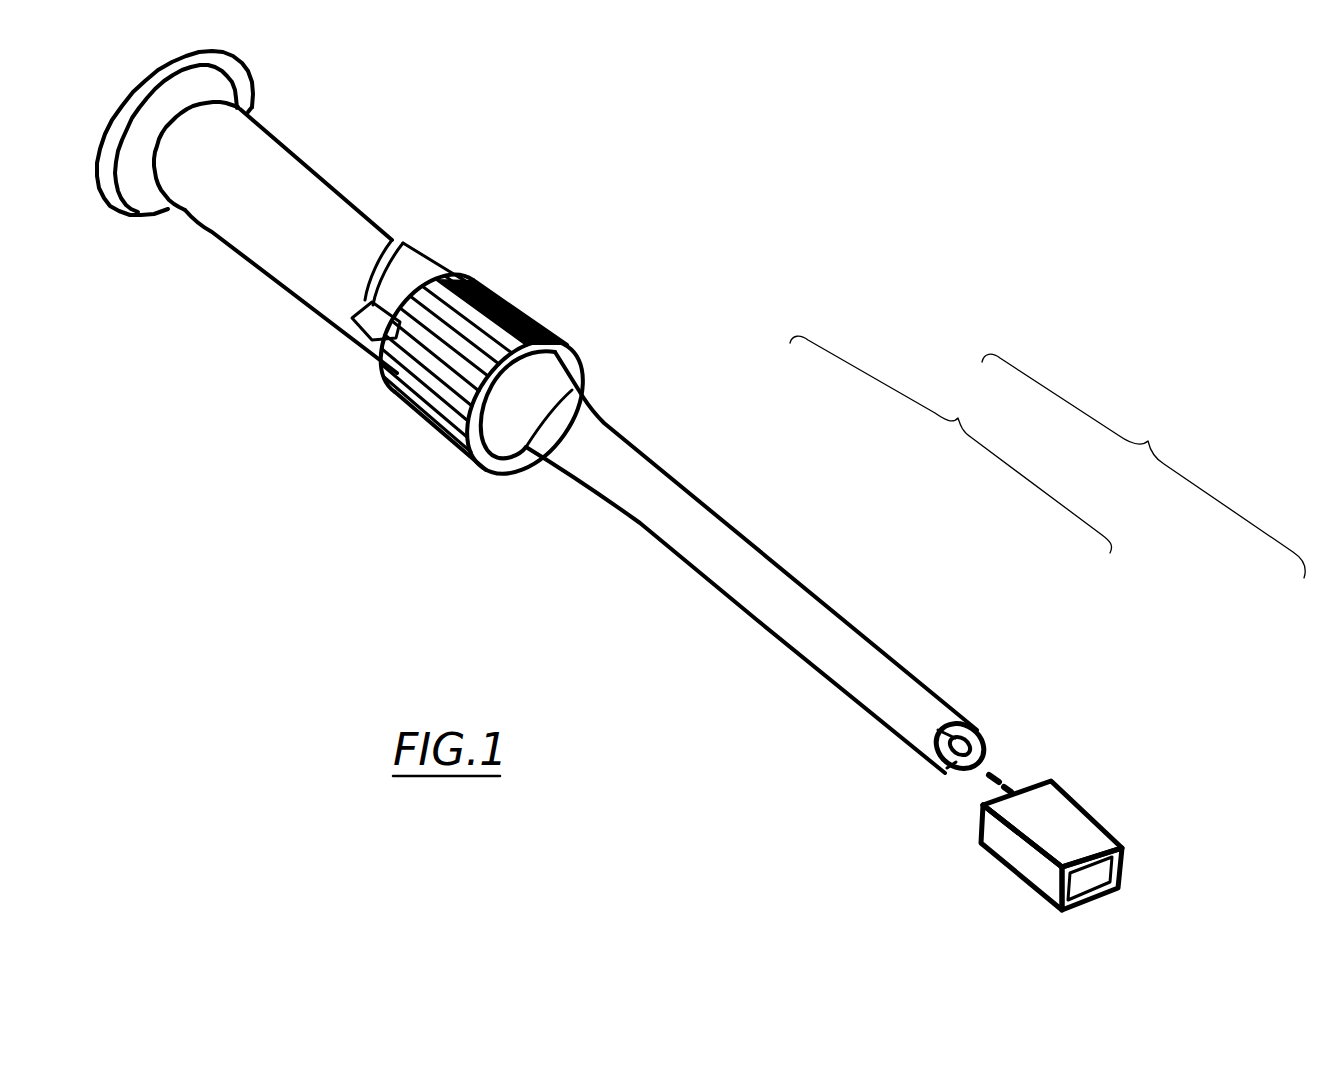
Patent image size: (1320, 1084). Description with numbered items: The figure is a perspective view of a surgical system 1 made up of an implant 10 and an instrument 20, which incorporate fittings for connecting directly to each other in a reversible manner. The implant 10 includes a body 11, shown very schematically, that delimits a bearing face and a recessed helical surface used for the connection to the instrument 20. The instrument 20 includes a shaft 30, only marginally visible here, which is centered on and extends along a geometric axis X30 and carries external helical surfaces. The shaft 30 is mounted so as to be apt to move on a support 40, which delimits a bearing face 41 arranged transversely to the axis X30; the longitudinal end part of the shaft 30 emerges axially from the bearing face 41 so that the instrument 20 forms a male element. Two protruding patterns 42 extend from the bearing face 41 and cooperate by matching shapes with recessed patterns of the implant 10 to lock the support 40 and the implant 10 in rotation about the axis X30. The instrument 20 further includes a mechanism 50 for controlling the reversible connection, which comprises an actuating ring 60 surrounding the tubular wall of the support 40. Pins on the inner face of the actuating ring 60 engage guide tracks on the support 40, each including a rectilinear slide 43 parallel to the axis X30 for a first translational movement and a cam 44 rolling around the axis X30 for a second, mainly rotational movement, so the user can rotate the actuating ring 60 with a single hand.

The surgical system 1 is at (1143, 466).
The implant 10 is at (1118, 802).
The body 11 is at (1023, 857).
The instrument 20 is at (951, 444).
The shaft 30 is at (972, 722).
The geometric axis X30 is at (1005, 784).
The support 40 is at (780, 552).
The bearing face 41 is at (935, 731).
The protruding patterns 42 is at (950, 772).
The rectilinear slide 43 is at (367, 346).
The cam 44 is at (395, 255).
The mechanism 50 is at (578, 322).
The actuating ring 60 is at (518, 295).